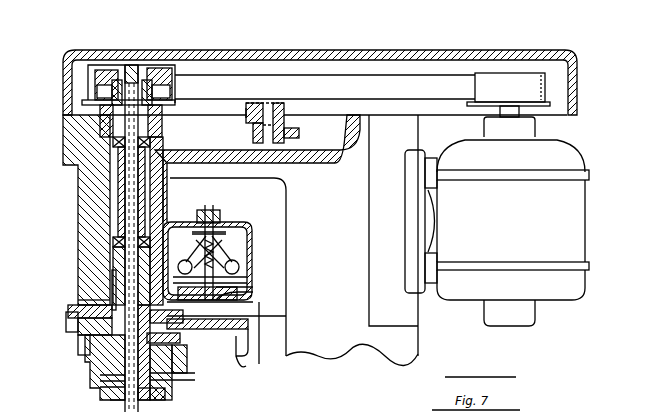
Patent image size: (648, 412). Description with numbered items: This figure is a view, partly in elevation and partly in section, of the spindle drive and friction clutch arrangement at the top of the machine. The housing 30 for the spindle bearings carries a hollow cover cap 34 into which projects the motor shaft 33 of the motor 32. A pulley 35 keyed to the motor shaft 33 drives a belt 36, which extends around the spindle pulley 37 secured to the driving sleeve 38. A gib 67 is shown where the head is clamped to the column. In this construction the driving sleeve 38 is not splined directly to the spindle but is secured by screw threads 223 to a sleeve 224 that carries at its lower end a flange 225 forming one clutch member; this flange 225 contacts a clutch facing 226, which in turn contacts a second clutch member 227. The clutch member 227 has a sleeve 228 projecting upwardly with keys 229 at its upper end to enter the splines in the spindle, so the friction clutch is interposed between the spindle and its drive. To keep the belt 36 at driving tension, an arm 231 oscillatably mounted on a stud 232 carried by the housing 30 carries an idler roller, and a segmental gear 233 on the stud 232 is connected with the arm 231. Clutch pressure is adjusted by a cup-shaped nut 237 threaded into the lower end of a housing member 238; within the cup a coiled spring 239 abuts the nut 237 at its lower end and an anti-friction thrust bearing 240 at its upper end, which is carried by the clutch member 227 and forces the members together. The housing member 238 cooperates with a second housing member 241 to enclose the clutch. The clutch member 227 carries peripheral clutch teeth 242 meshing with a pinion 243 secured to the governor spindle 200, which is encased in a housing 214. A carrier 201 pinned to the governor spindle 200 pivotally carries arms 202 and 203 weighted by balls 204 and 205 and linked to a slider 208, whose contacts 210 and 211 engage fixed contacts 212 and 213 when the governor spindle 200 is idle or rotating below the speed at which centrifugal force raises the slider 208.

The housing 30 is at (77, 172).
The motor 32 is at (578, 193).
The motor shaft 33 is at (521, 112).
The cover cap 34 is at (415, 60).
The pulley 35 is at (516, 80).
The belt 36 is at (318, 75).
The spindle pulley 37 is at (100, 78).
The driving sleeve 38 is at (136, 70).
The gib 67 is at (58, 411).
The governor spindle 200 is at (225, 301).
The carrier 201 is at (216, 222).
The arm 202 is at (195, 233).
The arm 203 is at (220, 238).
The ball 204 is at (182, 259).
The ball 205 is at (240, 268).
The slider 208 is at (220, 280).
The contact 210 is at (189, 262).
The contact 211 is at (250, 287).
The fixed contact 212 is at (240, 316).
The fixed contact 213 is at (245, 297).
The housing 214 is at (255, 245).
The screw threads 223 is at (114, 250).
The sleeve 224 is at (114, 263).
The flange 225 is at (90, 305).
The clutch facing 226 is at (78, 333).
The clutch member 227 is at (88, 364).
The sleeve 228 is at (112, 283).
The keys 229 is at (78, 302).
The arm 231 is at (246, 110).
The stud 232 is at (271, 107).
The segmental gear 233 is at (299, 133).
The cup-shaped nut 237 is at (163, 392).
The housing member 238 is at (182, 360).
The coiled spring 239 is at (176, 384).
The anti-friction thrust bearing 240 is at (93, 387).
The housing member 241 is at (66, 318).
The clutch teeth 242 is at (78, 345).
The pinion 243 is at (245, 340).